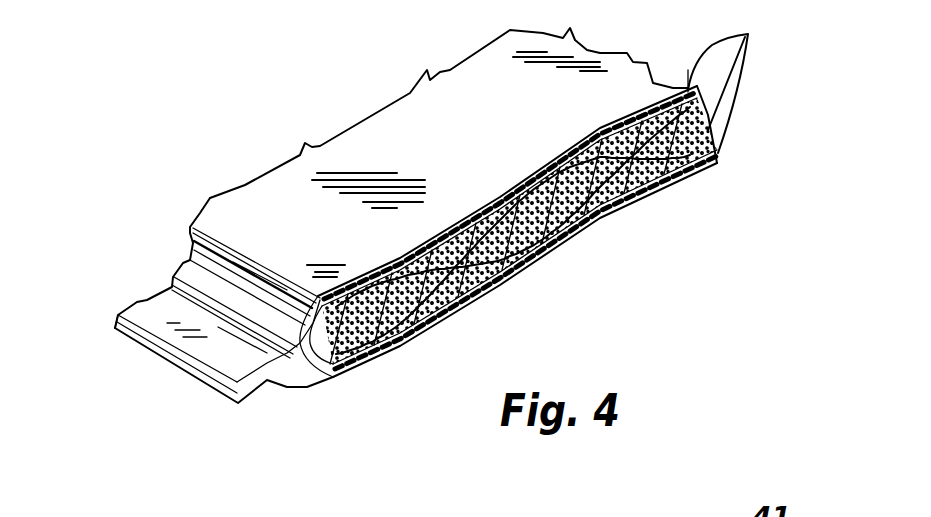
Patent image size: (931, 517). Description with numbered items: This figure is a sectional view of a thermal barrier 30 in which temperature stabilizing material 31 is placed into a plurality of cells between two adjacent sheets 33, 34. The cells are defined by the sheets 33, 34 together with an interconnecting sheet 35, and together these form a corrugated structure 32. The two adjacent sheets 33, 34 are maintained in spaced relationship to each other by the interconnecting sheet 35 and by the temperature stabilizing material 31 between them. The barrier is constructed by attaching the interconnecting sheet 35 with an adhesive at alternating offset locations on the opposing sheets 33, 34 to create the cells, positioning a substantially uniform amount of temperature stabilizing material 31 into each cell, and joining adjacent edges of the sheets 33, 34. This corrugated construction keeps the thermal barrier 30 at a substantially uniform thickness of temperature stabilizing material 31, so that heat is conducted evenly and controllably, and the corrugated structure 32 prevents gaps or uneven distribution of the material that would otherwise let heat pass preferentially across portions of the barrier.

The thermal barrier 30 is at (222, 105).
The temperature stabilizing material 31 is at (363, 360).
The corrugated structure 32 is at (741, 81).
The adjacent sheet 33 is at (226, 297).
The adjacent sheet 34 is at (458, 303).
The interconnecting sheet 35 is at (653, 187).